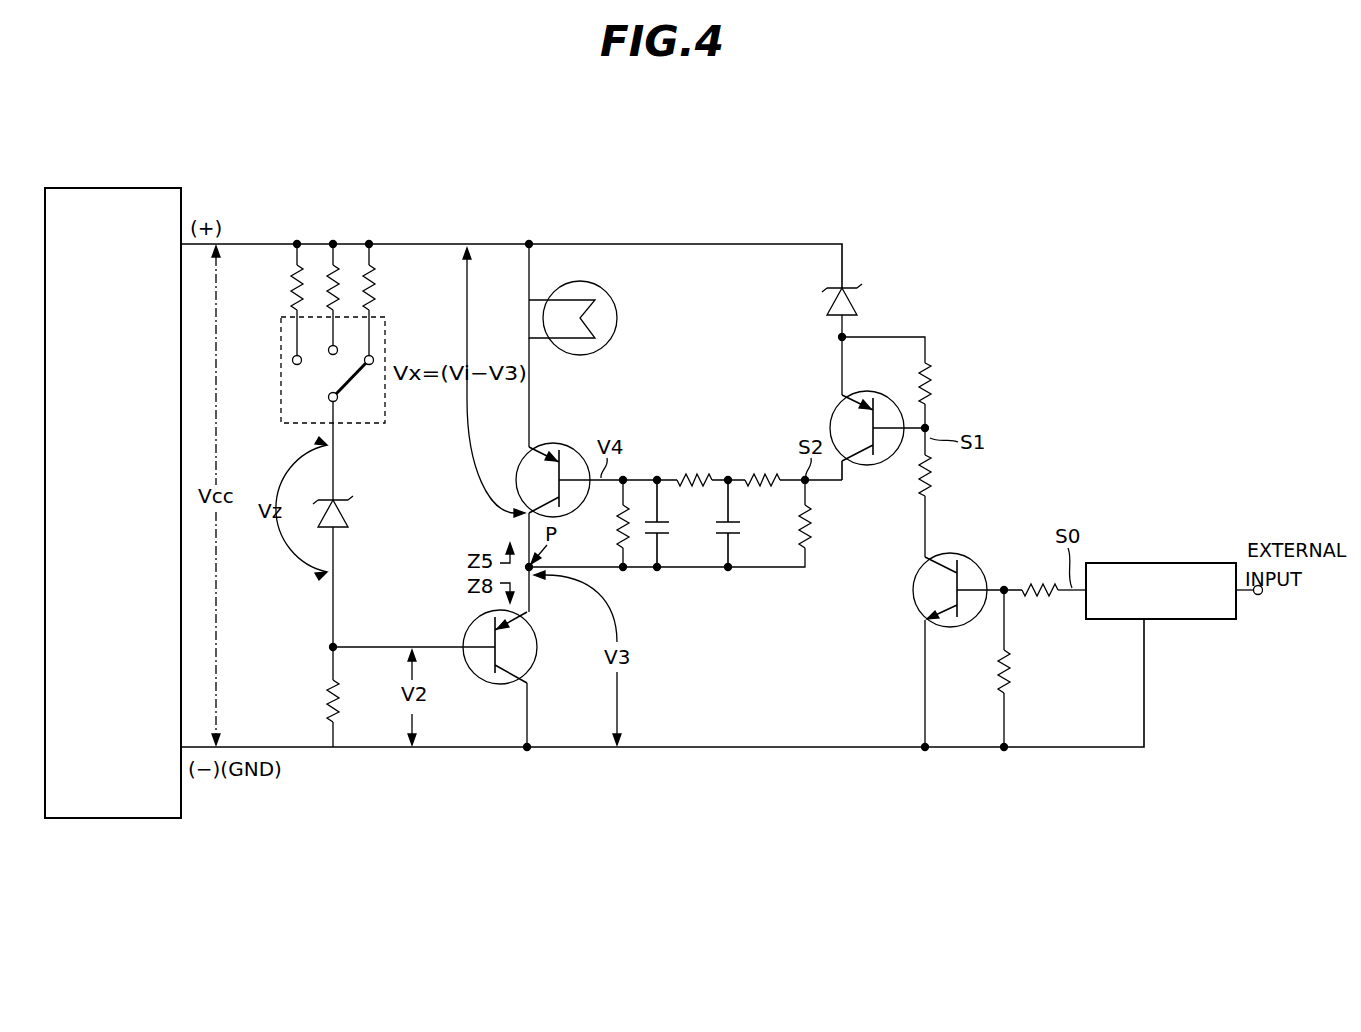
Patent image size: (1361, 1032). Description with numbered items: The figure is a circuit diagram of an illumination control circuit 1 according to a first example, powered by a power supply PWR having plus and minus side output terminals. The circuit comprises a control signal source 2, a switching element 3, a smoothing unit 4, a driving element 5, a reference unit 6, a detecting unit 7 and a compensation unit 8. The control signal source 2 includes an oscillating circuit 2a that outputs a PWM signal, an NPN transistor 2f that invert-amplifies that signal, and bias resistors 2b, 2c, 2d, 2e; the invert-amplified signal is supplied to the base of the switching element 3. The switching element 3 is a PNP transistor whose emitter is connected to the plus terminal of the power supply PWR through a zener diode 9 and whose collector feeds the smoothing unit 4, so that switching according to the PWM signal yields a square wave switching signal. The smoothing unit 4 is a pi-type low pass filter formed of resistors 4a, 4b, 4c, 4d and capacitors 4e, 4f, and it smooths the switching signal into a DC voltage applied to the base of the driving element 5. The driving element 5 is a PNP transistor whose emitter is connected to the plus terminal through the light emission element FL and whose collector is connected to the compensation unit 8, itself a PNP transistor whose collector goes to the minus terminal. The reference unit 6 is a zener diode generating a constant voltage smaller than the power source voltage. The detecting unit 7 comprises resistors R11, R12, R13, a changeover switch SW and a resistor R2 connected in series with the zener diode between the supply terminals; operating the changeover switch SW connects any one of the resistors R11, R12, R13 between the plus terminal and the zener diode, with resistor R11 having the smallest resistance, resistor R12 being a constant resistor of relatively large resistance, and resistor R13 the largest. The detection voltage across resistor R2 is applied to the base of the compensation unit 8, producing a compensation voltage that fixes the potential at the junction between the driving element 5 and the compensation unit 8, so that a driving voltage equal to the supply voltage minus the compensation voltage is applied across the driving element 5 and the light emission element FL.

The illumination control circuit 1 is at (723, 210).
The control signal source 2 is at (1023, 497).
The oscillating circuit 2a is at (1148, 563).
The bias resistor 2b is at (1028, 585).
The bias resistor 2c is at (1012, 673).
The bias resistor 2d is at (934, 490).
The bias resistor 2e is at (934, 388).
The NPN transistor 2f is at (912, 590).
The switching element 3 is at (836, 417).
The smoothing unit 4 is at (695, 403).
The resistor 4a is at (812, 530).
The resistor 4b is at (757, 478).
The resistor 4c is at (687, 478).
The resistor 4d is at (620, 527).
The capacitor 4e is at (740, 527).
The capacitor 4f is at (669, 527).
The driving element 5 is at (546, 444).
The reference unit 6 is at (349, 508).
The detecting unit 7 is at (387, 470).
The compensation unit 8 is at (538, 650).
The zener diode 9 is at (856, 301).
The power supply PWR is at (119, 188).
The changeover switch SW is at (281, 350).
The resistor R11 is at (373, 296).
The resistor R12 is at (338, 288).
The resistor R13 is at (296, 293).
The resistor R2 is at (327, 690).
The light emission element FL is at (617, 318).